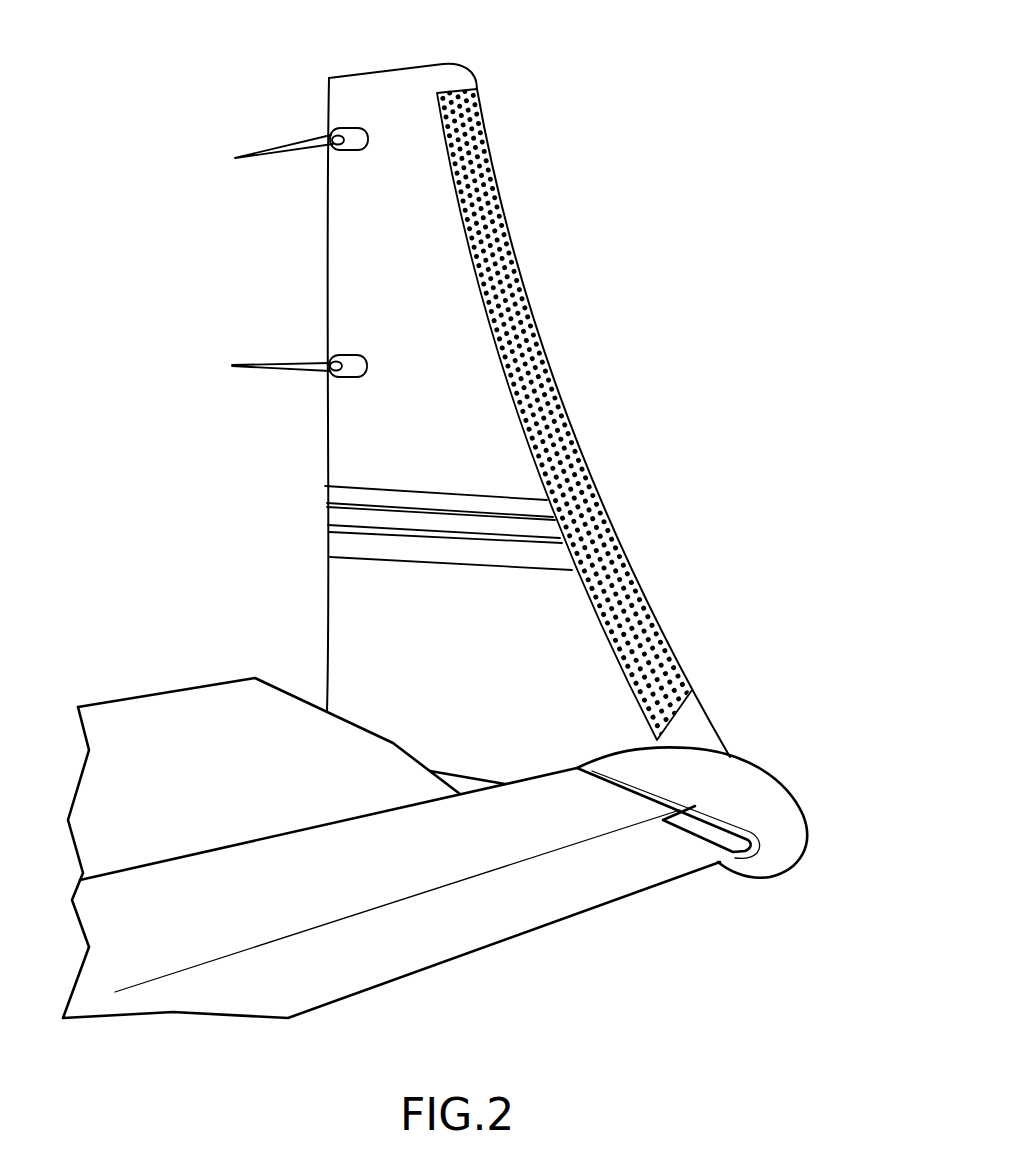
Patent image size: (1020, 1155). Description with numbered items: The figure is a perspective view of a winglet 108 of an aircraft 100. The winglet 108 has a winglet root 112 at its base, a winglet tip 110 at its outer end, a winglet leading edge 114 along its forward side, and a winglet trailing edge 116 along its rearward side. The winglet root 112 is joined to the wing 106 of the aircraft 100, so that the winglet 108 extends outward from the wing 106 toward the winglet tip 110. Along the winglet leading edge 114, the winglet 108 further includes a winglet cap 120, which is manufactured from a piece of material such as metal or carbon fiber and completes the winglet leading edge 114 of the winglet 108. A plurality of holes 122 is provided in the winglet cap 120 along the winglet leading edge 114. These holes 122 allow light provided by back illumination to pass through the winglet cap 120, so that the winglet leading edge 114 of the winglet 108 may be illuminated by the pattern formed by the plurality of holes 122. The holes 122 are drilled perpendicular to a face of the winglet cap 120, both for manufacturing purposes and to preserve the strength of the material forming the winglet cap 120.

The aircraft 100 is at (712, 73).
The wing 106 is at (348, 862).
The winglet 108 is at (305, 249).
The winglet tip 110 is at (388, 67).
The winglet root 112 is at (520, 758).
The winglet leading edge 114 is at (503, 190).
The winglet trailing edge 116 is at (322, 433).
The winglet cap 120 is at (535, 365).
The plurality of holes 122 is at (477, 133).